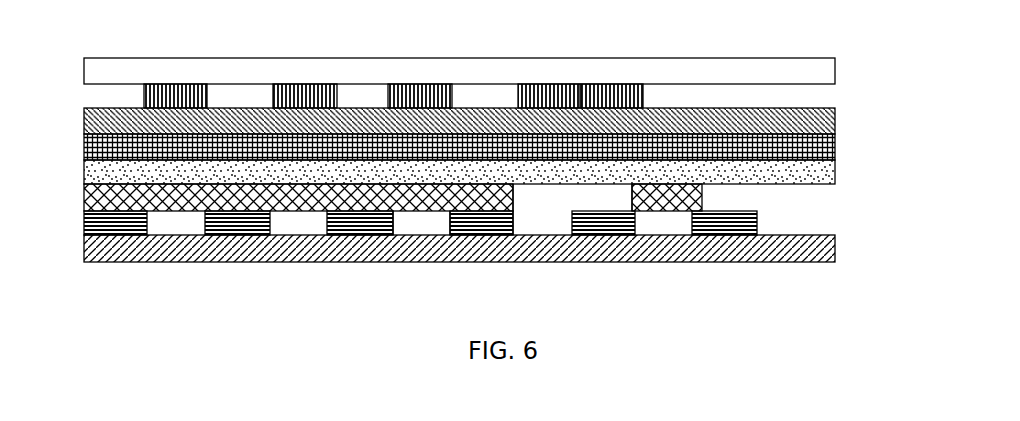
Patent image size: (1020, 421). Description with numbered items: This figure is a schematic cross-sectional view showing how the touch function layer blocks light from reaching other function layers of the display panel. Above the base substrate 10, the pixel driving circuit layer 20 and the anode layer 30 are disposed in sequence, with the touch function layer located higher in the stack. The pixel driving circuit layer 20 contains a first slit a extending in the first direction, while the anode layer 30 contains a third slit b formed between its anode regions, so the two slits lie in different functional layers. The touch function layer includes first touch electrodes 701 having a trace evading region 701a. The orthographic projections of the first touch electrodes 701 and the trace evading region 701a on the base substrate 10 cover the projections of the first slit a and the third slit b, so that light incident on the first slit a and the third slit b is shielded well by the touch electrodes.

The first touch electrodes 701 is at (440, 87).
The trace evading region 701a is at (567, 84).
The anode layer 30 is at (750, 198).
The pixel driving circuit layer 20 is at (813, 222).
The base substrate 10 is at (836, 248).
The first slit a is at (432, 217).
The third slit b is at (548, 197).